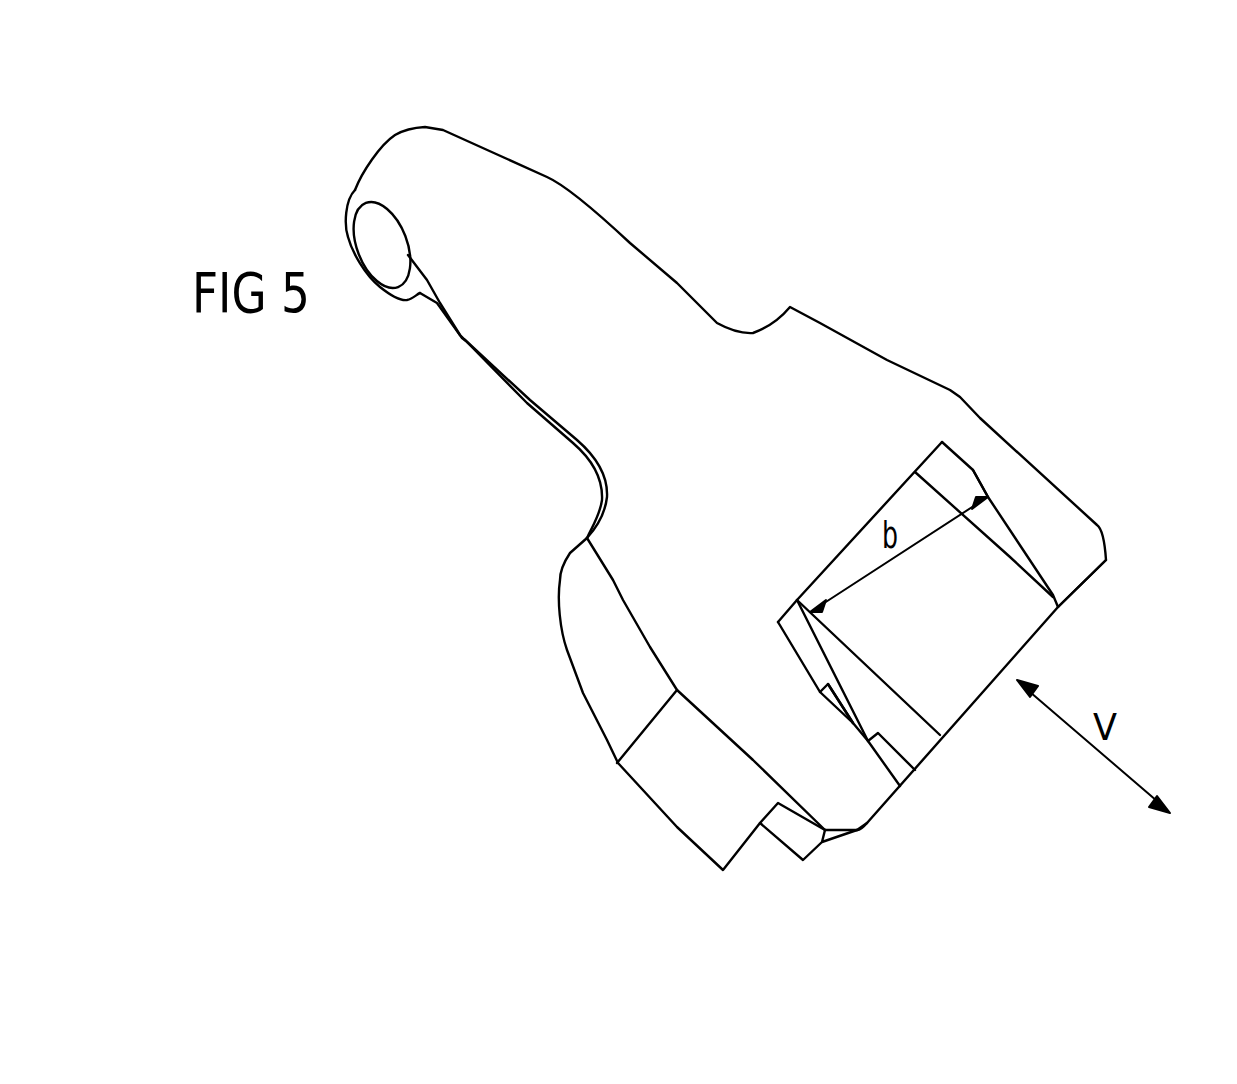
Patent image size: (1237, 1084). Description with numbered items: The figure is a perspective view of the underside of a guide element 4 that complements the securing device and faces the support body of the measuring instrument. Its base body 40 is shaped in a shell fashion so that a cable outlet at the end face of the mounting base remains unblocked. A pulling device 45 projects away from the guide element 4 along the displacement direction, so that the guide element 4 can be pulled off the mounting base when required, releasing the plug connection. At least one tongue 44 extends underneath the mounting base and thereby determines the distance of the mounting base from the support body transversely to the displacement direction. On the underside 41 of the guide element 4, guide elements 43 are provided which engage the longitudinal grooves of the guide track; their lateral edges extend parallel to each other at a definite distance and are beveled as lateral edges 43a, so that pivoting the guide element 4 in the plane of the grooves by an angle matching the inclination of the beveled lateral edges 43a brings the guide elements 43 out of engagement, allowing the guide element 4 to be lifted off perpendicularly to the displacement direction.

The guide element 4 is at (865, 322).
The base body 40 is at (600, 670).
The underside 41 is at (788, 742).
The guide elements 43 is at (953, 450).
The beveled lateral edges 43a is at (1010, 522).
The tongue 44 is at (1083, 587).
The pulling device 45 is at (432, 165).